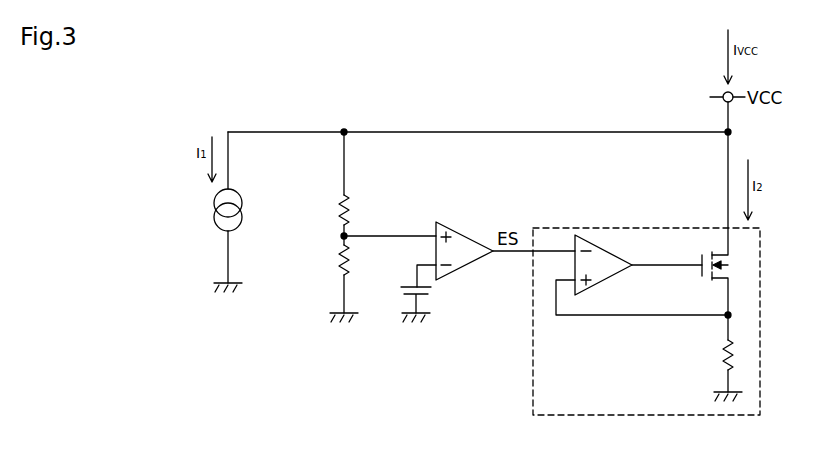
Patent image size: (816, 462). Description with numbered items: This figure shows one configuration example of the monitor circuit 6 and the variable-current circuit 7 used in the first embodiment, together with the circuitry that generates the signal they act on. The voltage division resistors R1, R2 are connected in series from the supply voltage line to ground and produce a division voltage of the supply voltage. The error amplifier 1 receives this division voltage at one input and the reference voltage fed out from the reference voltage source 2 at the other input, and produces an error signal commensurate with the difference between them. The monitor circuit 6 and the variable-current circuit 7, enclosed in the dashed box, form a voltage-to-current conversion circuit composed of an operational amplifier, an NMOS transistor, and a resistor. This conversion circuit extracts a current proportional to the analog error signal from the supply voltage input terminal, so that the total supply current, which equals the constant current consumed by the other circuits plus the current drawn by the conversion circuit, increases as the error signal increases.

The error amplifier 1 is at (464, 231).
The reference voltage source 2 is at (395, 290).
The monitor circuit 6 is at (656, 228).
The variable-current circuit 7 is at (649, 266).
The voltage division resistor R1 is at (337, 207).
The voltage division resistor R2 is at (337, 255).